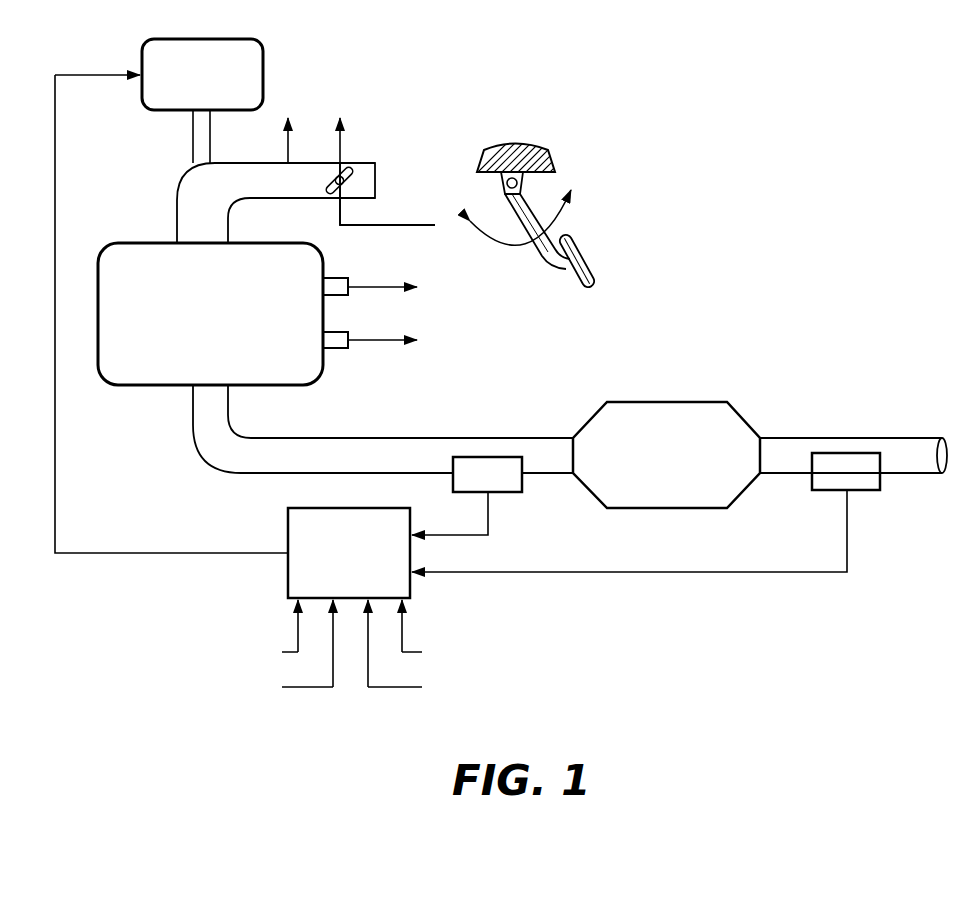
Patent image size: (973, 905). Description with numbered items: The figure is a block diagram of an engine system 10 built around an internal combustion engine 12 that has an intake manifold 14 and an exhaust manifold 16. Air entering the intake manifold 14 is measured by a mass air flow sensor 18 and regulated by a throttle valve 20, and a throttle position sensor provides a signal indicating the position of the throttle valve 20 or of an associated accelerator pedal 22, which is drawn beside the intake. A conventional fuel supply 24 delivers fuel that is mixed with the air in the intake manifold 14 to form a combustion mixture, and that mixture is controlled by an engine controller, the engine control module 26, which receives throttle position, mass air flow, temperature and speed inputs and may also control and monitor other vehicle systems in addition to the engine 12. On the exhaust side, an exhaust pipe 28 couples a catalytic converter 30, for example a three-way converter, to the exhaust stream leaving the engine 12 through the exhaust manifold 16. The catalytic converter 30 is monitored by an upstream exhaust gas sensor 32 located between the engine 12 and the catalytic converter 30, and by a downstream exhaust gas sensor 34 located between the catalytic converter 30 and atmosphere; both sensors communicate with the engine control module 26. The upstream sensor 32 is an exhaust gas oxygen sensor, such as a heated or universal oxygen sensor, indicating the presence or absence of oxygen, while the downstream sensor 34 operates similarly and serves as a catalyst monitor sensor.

The engine system 10 is at (760, 45).
The internal combustion engine 12 is at (141, 242).
The intake manifold 14 is at (375, 168).
The exhaust manifold 16 is at (205, 455).
The mass air flow sensor 18 is at (342, 142).
The throttle valve 20 is at (345, 186).
The accelerator pedal 22 is at (585, 249).
The fuel supply 24 is at (200, 38).
The engine control module 26 is at (288, 535).
The exhaust pipe 28 is at (410, 435).
The catalytic converter 30 is at (685, 402).
The upstream exhaust gas sensor 32 is at (503, 492).
The downstream exhaust gas sensor 34 is at (862, 490).